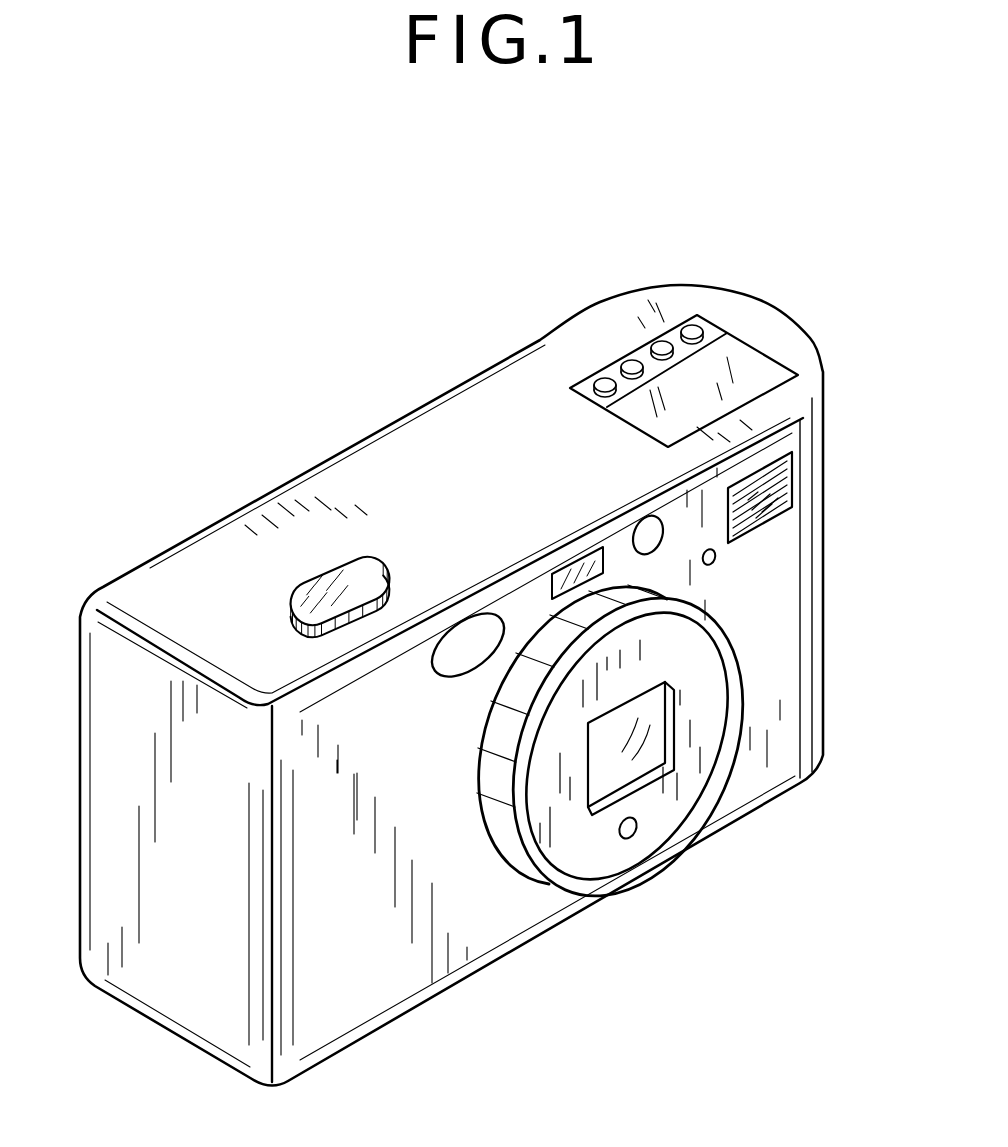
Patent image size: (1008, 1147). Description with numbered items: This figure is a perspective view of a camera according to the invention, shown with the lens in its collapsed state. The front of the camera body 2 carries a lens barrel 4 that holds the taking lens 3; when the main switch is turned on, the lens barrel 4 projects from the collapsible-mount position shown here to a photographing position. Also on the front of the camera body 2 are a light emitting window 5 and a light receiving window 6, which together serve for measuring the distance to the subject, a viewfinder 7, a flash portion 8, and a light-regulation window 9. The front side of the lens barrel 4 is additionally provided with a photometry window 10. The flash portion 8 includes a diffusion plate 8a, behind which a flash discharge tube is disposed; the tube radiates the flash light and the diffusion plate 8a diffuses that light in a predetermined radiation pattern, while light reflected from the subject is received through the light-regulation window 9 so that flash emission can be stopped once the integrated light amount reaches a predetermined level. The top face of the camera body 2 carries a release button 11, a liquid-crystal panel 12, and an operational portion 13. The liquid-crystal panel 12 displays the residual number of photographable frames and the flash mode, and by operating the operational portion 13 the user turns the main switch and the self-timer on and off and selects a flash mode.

The camera body 2 is at (207, 527).
The taking lens 3 is at (660, 720).
The lens barrel 4 is at (521, 868).
The light emitting window 5 is at (641, 514).
The light receiving window 6 is at (463, 672).
The viewfinder 7 is at (578, 548).
The flash portion 8 is at (795, 478).
The diffusion plate 8a is at (763, 513).
The light-regulation window 9 is at (716, 563).
The photometry window 10 is at (634, 833).
The release button 11 is at (362, 570).
The liquid-crystal panel 12 is at (753, 367).
The operational portion 13 is at (612, 358).